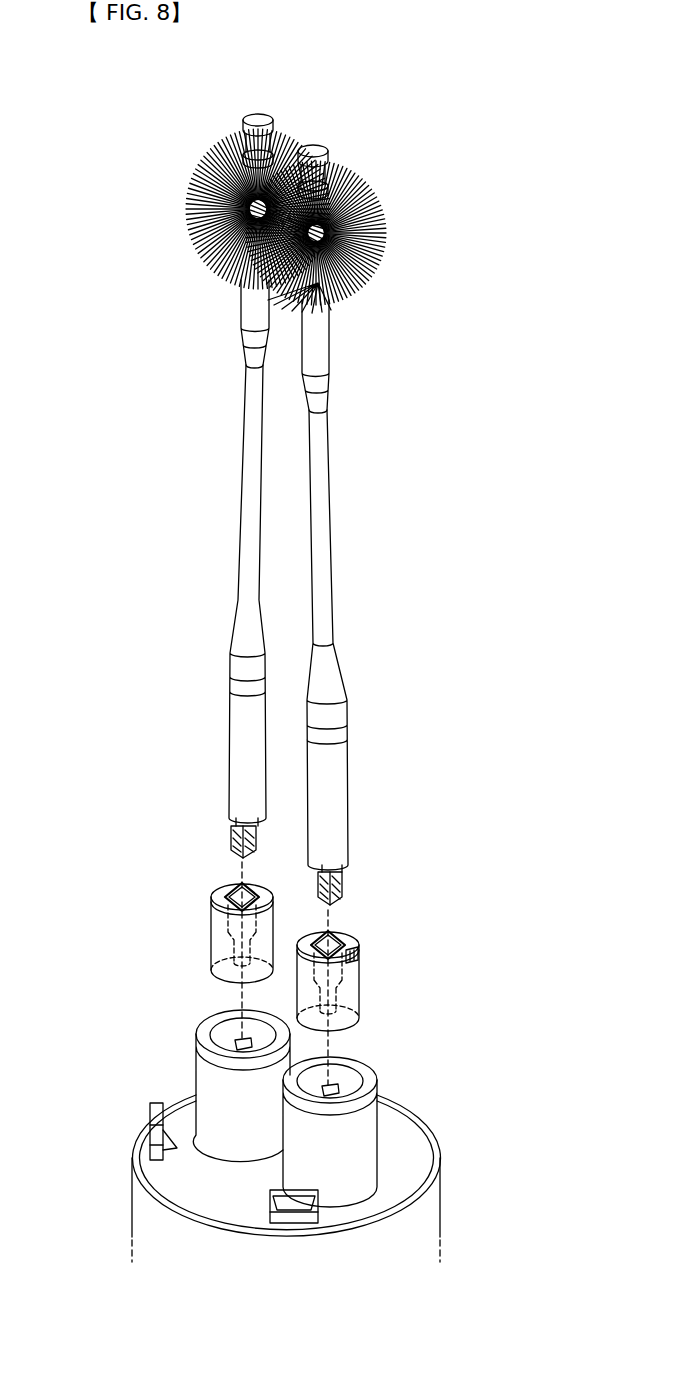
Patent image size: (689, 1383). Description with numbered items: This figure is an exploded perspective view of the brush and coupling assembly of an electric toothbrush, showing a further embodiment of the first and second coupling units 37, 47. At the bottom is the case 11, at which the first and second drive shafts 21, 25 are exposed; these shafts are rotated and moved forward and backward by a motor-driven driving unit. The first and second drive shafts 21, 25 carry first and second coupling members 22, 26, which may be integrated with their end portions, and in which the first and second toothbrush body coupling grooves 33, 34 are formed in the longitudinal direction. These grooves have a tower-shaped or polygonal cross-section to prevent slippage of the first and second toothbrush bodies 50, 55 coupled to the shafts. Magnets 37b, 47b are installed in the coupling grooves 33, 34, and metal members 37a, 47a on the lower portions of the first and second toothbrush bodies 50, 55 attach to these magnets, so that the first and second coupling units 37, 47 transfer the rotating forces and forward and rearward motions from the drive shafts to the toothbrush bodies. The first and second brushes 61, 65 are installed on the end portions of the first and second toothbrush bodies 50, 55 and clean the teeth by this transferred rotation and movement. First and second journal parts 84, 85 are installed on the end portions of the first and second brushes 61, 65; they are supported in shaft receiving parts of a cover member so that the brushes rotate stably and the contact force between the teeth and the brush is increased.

The case 11 is at (331, 1136).
The first drive shaft 21 is at (205, 1045).
The first coupling member 22 is at (213, 940).
The second drive shaft 25 is at (375, 1102).
The second coupling member 26 is at (352, 1012).
The first toothbrush body coupling groove 33 is at (218, 907).
The second toothbrush body coupling groove 34 is at (360, 958).
The first coupling unit 37 is at (170, 926).
The metal member 37a is at (232, 840).
The magnet 37b is at (198, 949).
The second coupling unit 47 is at (394, 971).
The metal member 47a is at (343, 892).
The magnet 47b is at (371, 997).
The first toothbrush body 50 is at (246, 522).
The second toothbrush body 55 is at (321, 540).
The first brush 61 is at (213, 253).
The second brush 65 is at (362, 288).
The first journal part 84 is at (286, 130).
The second journal part 85 is at (348, 158).